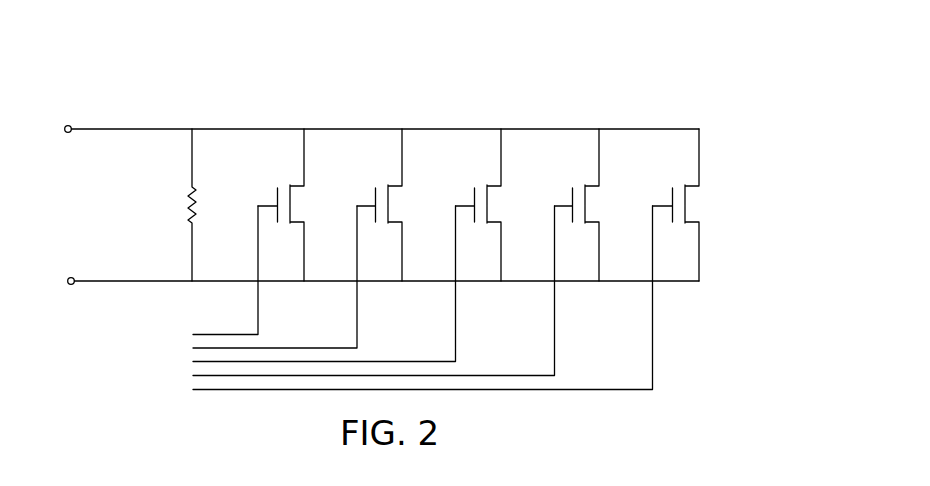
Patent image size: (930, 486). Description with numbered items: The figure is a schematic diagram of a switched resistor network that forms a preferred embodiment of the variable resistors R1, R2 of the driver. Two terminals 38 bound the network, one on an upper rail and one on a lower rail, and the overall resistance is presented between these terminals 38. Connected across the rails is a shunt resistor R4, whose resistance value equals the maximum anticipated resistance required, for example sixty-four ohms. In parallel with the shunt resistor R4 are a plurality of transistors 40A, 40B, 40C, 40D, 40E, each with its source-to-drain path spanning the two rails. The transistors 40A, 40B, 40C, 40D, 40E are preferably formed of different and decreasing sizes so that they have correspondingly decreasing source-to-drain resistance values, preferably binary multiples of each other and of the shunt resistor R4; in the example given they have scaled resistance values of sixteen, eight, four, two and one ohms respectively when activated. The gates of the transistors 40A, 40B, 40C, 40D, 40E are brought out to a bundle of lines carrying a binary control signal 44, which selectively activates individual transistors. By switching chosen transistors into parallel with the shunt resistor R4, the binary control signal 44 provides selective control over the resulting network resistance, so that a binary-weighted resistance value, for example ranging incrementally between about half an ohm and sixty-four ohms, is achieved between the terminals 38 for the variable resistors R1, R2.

The variable resistor R1 is at (428, 147).
The variable resistor R2 is at (661, 77).
The terminals 38 is at (68, 125).
The shunt resistor R4 is at (174, 205).
The transistor 40A is at (290, 203).
The transistor 40B is at (388, 203).
The transistor 40C is at (487, 203).
The transistor 40D is at (585, 203).
The transistor 40E is at (685, 203).
The binary control signal 44 is at (182, 333).